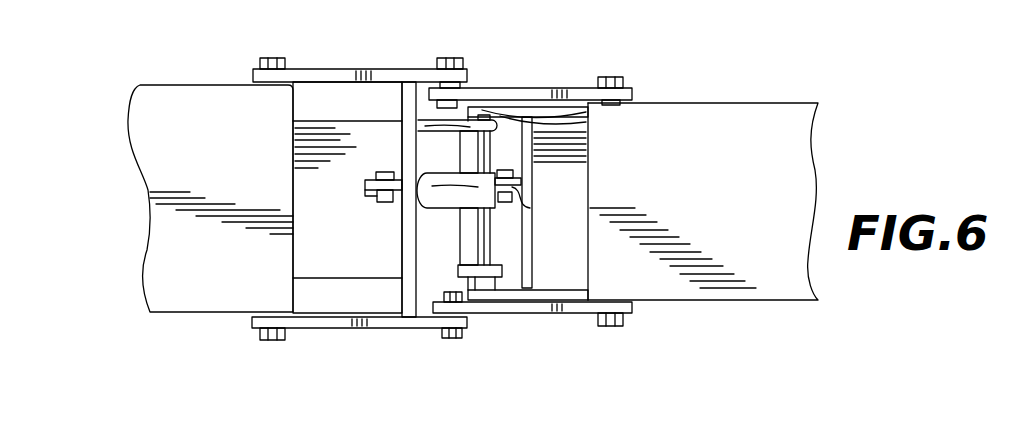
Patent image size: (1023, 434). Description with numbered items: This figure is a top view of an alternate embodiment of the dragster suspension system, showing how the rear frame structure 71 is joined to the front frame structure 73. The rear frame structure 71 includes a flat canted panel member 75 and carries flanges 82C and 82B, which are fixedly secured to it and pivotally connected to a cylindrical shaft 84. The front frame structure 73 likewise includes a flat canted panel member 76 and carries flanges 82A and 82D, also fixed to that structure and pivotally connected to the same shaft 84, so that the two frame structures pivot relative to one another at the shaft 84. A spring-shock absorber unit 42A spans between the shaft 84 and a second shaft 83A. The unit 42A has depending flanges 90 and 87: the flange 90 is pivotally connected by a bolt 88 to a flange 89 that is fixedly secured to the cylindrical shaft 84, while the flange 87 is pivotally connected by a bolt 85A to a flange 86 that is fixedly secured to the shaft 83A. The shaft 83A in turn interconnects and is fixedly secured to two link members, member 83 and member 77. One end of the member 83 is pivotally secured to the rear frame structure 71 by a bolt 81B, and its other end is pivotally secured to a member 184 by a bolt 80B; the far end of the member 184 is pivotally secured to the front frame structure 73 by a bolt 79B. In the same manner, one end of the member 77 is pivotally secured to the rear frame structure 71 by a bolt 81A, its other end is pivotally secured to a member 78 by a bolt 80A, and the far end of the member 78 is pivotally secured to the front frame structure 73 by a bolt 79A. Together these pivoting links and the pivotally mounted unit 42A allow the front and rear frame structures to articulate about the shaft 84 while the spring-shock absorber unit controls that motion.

The rear frame structure 71 is at (114, 125).
The front frame structure 73 is at (772, 96).
The flat canted panel member 75 is at (346, 259).
The flat canted panel member 76 is at (578, 195).
The member 77 is at (340, 328).
The member 78 is at (518, 313).
The bolt 79A is at (620, 328).
The bolt 79B is at (609, 77).
The bolt 80A is at (450, 338).
The bolt 80B is at (445, 58).
The bolt 81A is at (268, 340).
The bolt 81B is at (285, 58).
The flange 82A is at (525, 287).
The flange 82B is at (458, 270).
The flange 82C is at (414, 130).
The flange 82D is at (590, 116).
The member 83 is at (318, 69).
The shaft 83A is at (403, 250).
The cylindrical shaft 84 is at (533, 243).
The bolt 85A is at (388, 172).
The flange 86 is at (365, 186).
The depending flange 87 is at (365, 196).
The bolt 88 is at (504, 170).
The flange 89 is at (584, 168).
The depending flange 90 is at (517, 210).
The member 184 is at (520, 88).
The spring-shock absorber unit 42A is at (433, 211).